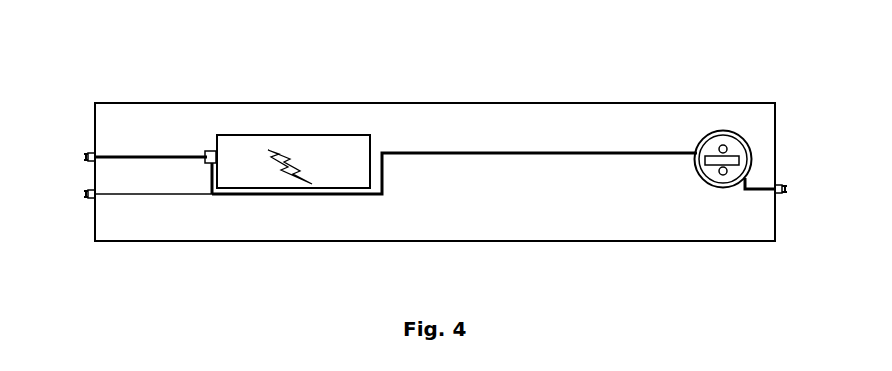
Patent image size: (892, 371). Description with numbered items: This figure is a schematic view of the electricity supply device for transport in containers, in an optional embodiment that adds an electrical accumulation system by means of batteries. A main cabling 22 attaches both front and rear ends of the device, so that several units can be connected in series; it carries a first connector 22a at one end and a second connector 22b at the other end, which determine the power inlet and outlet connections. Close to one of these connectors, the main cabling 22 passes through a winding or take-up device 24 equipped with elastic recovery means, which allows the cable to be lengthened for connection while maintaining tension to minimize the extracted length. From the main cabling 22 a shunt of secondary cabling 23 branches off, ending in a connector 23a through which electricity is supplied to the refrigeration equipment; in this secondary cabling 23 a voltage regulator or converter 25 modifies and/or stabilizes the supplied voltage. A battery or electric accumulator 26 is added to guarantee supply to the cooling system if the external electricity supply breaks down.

The main cabling 22 is at (462, 150).
The first connector 22a is at (781, 195).
The second connector 22b is at (87, 199).
The secondary cabling 23 is at (149, 152).
The connector 23a is at (84, 154).
The winding or take-up device 24 is at (724, 131).
The voltage regulator or converter 25 is at (212, 150).
The battery or electric accumulator 26 is at (316, 160).